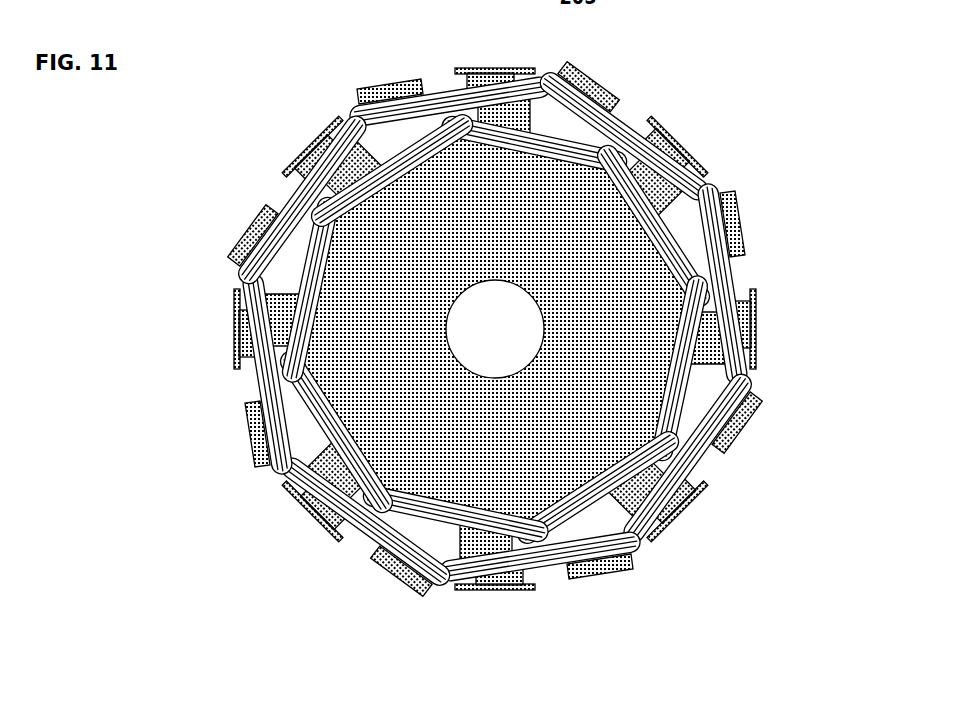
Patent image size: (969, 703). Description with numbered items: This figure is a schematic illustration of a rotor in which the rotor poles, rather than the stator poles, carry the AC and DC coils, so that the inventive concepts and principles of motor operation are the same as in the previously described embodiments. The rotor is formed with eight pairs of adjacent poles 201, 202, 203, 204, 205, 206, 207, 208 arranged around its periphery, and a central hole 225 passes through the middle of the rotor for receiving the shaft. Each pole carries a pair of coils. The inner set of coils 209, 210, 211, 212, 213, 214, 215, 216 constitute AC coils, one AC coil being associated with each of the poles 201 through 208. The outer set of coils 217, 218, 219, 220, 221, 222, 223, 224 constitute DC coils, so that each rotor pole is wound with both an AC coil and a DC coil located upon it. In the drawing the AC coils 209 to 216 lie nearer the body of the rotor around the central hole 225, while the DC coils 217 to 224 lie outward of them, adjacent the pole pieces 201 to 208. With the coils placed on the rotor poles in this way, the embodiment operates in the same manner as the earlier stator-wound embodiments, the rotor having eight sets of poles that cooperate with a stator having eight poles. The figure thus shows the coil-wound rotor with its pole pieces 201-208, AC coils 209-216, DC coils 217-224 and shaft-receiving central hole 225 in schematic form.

The rotor pole 201 is at (420, 71).
The rotor pole 202 is at (623, 91).
The rotor pole 203 is at (753, 253).
The rotor pole 204 is at (742, 443).
The rotor pole 205 is at (513, 594).
The rotor pole 206 is at (376, 575).
The rotor pole 207 is at (226, 340).
The rotor pole 208 is at (290, 143).
The AC coil 209 is at (412, 165).
The AC coil 210 is at (481, 146).
The AC coil 211 is at (614, 210).
The AC coil 212 is at (658, 403).
The AC coil 213 is at (564, 498).
The AC coil 214 is at (416, 498).
The AC coil 215 is at (336, 410).
The AC coil 216 is at (321, 262).
The DC coil 217 is at (400, 96).
The DC coil 218 is at (690, 158).
The DC coil 219 is at (757, 359).
The DC coil 220 is at (718, 442).
The DC coil 221 is at (600, 562).
The DC coil 222 is at (300, 506).
The DC coil 223 is at (235, 326).
The DC coil 224 is at (281, 233).
The central hole 225 is at (524, 343).